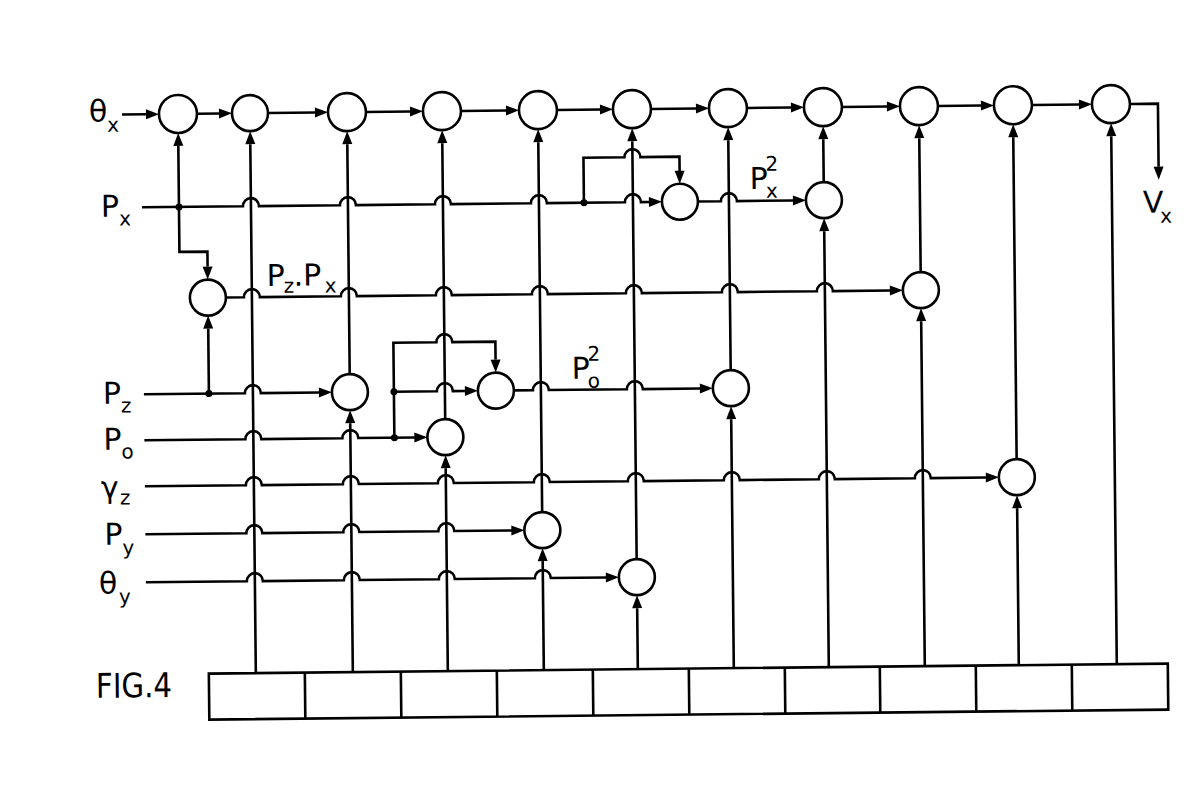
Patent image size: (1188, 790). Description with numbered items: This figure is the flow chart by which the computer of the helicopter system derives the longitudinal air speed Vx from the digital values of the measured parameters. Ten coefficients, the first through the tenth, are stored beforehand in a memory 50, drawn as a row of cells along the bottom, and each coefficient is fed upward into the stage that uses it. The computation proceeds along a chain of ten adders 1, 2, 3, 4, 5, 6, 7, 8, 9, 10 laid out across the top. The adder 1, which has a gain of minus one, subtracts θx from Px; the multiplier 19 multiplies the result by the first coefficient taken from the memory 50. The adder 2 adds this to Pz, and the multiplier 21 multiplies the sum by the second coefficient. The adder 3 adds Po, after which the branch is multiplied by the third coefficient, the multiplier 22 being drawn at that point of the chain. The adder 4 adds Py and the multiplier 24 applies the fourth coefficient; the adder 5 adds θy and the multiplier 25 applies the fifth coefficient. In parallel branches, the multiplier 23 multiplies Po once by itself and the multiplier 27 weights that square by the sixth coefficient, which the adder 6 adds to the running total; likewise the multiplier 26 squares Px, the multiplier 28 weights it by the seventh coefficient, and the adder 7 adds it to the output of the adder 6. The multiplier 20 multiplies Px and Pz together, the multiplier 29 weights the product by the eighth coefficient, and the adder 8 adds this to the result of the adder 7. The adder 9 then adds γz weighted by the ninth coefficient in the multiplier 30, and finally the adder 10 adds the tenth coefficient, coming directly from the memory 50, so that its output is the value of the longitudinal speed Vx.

The adder 1 is at (190, 93).
The adder 2 is at (360, 93).
The adder 3 is at (473, 92).
The adder 4 is at (551, 93).
The adder 5 is at (645, 93).
The adder 6 is at (741, 93).
The adder 7 is at (836, 92).
The adder 8 is at (955, 77).
The adder 9 is at (1043, 78).
The adder 10 is at (1117, 90).
The multiplier 19 is at (269, 103).
The multiplier 20 is at (193, 310).
The multiplier 21 is at (378, 362).
The multiplier 22 is at (463, 438).
The multiplier 23 is at (524, 363).
The multiplier 24 is at (559, 520).
The multiplier 25 is at (656, 576).
The multiplier 26 is at (716, 186).
The multiplier 27 is at (749, 376).
The multiplier 28 is at (844, 199).
The multiplier 29 is at (938, 287).
The multiplier 30 is at (1034, 481).
The memory 50 is at (241, 657).